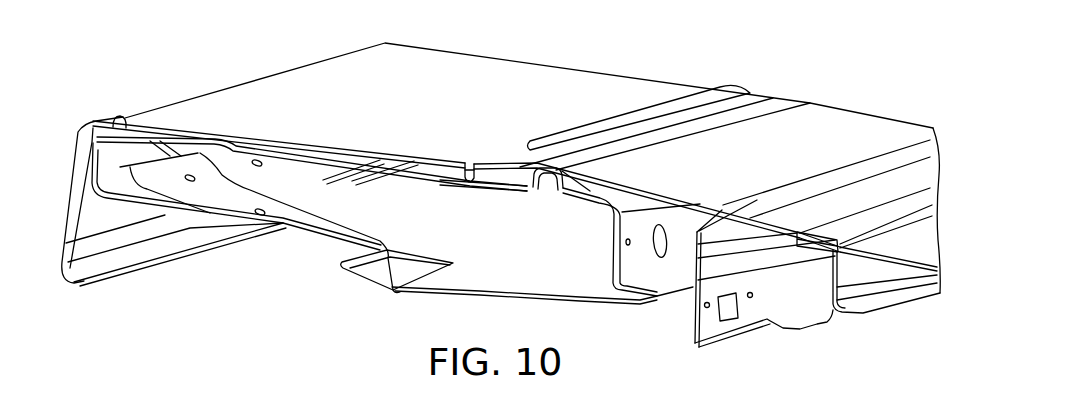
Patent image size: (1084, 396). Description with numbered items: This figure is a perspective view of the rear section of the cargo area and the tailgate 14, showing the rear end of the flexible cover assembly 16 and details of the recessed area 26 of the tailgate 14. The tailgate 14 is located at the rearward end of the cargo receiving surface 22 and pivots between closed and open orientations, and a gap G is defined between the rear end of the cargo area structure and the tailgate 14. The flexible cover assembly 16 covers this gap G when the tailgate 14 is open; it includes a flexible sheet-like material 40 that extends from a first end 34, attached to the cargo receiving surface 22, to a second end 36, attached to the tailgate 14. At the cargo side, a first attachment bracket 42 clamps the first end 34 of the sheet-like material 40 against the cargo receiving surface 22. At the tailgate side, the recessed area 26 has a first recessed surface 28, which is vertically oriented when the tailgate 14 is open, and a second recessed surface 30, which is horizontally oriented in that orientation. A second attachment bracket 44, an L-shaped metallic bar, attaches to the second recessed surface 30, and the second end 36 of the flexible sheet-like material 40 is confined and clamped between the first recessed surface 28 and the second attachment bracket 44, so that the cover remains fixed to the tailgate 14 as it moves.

The tailgate 14 is at (243, 76).
The flexible cover assembly 16 is at (836, 100).
The cargo receiving surface 22 is at (910, 240).
The recessed area 26 is at (526, 165).
The first recessed surface 28 is at (477, 163).
The second recessed surface 30 is at (513, 183).
The first end 34 is at (848, 227).
The second end 36 is at (483, 163).
The flexible sheet-like material 40 is at (788, 142).
The first attachment bracket 42 is at (807, 247).
The second attachment bracket 44 is at (495, 172).
The gap G is at (623, 256).